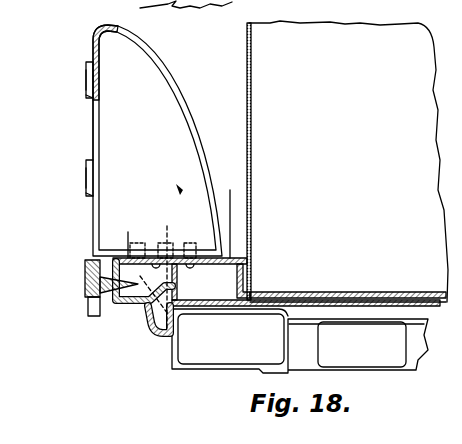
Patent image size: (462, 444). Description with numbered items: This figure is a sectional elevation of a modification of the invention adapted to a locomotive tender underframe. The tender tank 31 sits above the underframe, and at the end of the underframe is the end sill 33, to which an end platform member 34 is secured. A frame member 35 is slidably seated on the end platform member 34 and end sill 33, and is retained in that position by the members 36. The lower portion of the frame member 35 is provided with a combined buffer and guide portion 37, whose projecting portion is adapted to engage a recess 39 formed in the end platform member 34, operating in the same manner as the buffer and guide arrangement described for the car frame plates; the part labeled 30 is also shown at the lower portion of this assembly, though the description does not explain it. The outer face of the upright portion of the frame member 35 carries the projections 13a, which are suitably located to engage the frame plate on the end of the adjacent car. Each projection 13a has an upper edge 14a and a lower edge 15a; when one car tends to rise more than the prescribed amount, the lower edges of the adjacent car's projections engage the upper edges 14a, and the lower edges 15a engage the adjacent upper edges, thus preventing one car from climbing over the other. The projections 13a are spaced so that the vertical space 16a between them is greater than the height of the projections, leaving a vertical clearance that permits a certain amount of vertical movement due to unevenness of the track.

The projection 13a is at (87, 80).
The upper edge 14a is at (87, 64).
The lower edge 15a is at (88, 100).
The vertical space 16a is at (97, 120).
The sealing member 30 is at (104, 294).
The tender tank 31 is at (347, 161).
The end sill 33 is at (179, 129).
The end platform member 34 is at (156, 336).
The frame member 35 is at (157, 140).
The members 36 is at (163, 257).
The combined buffer and guide portion 37 is at (88, 304).
The recess 39 is at (127, 231).